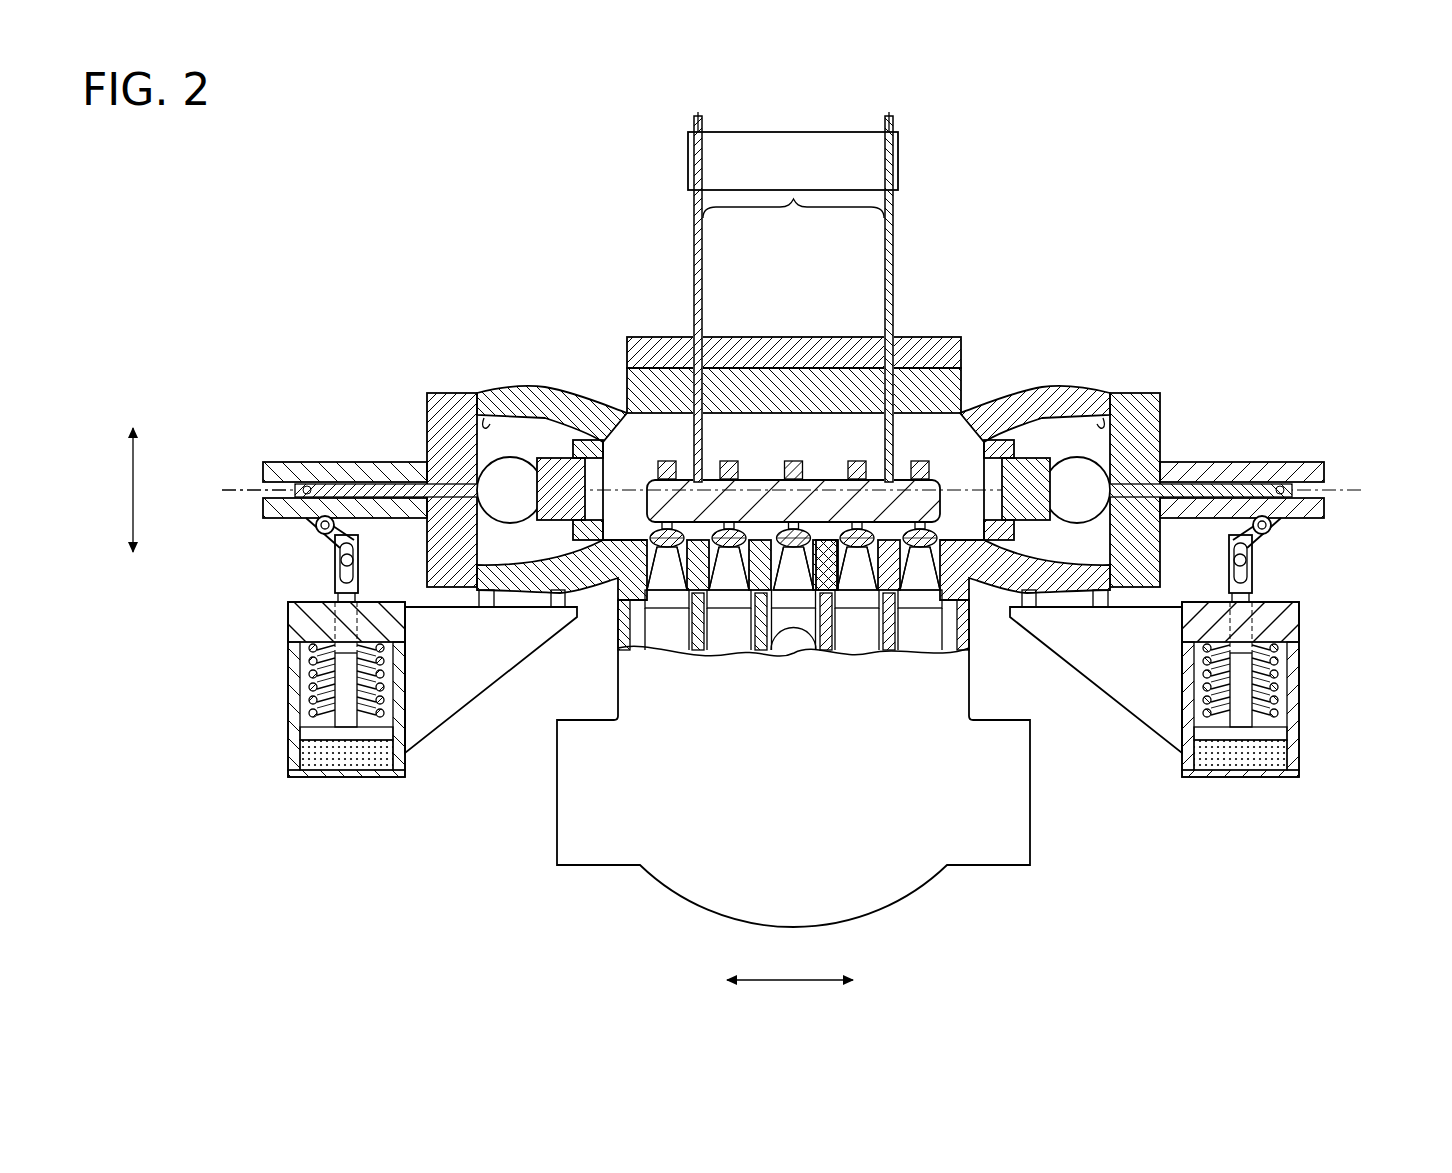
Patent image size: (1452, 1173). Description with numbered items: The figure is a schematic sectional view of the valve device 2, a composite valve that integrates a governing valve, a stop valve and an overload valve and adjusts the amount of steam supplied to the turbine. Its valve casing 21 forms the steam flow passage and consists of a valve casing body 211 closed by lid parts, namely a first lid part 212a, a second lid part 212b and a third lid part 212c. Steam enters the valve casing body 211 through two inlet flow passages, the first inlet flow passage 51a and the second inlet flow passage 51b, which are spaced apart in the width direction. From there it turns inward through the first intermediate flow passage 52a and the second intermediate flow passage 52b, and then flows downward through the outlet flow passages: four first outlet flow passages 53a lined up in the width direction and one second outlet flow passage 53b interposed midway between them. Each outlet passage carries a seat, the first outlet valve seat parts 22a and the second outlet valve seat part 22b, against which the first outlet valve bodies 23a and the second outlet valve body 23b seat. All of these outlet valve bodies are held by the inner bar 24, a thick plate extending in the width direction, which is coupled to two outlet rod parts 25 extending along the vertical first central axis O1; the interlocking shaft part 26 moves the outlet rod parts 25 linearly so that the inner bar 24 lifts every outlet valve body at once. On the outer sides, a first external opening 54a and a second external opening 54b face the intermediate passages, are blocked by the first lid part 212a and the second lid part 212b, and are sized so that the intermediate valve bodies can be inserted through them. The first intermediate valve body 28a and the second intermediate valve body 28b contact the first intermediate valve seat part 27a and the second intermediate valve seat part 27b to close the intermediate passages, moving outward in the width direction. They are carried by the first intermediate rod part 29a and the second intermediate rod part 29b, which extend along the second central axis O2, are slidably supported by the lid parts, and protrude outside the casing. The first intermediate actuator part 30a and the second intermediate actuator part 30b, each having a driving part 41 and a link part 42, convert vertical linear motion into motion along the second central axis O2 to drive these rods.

The valve device 2 is at (1210, 141).
The valve casing 21 is at (975, 690).
The valve casing body 211 is at (616, 612).
The first lid part 212a is at (457, 393).
The second lid part 212b is at (1185, 362).
The third lid part 212c is at (768, 340).
The first outlet valve seat part 22a is at (662, 600).
The second outlet valve seat part 22b is at (800, 650).
The first outlet valve body 23a is at (672, 600).
The second outlet valve body 23b is at (760, 650).
The inner bar 24 is at (822, 490).
The outlet rod part 25 is at (793, 231).
The interlocking shaft part 26 is at (805, 140).
The first intermediate valve seat part 27a is at (588, 440).
The second intermediate valve seat part 27b is at (995, 440).
The first intermediate valve body 28a is at (560, 458).
The second intermediate valve body 28b is at (1028, 458).
The first intermediate rod part 29a is at (396, 462).
The second intermediate rod part 29b is at (1180, 462).
The first intermediate actuator part 30a is at (272, 602).
The second intermediate actuator part 30b is at (1315, 604).
The driving part 41 is at (283, 697).
The link part 42 is at (318, 541).
The first inlet flow passage 51a is at (520, 457).
The second inlet flow passage 51b is at (1068, 457).
The first intermediate flow passage 52a is at (694, 415).
The second intermediate flow passage 52b is at (896, 415).
The first outlet flow passage 53a is at (676, 590).
The second outlet flow passage 53b is at (830, 650).
The first external opening 54a is at (484, 418).
The second external opening 54b is at (1130, 565).
The first central axis O1 is at (693, 126).
The second central axis O2 is at (265, 490).